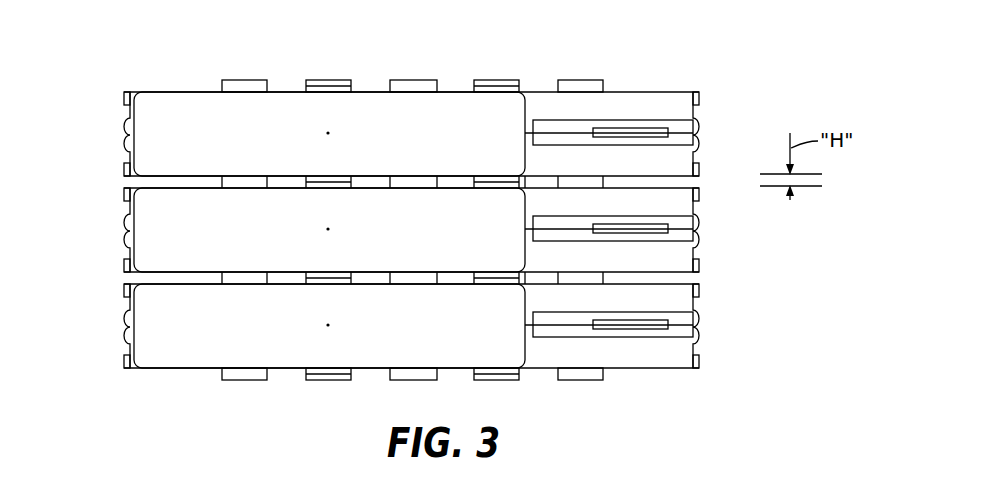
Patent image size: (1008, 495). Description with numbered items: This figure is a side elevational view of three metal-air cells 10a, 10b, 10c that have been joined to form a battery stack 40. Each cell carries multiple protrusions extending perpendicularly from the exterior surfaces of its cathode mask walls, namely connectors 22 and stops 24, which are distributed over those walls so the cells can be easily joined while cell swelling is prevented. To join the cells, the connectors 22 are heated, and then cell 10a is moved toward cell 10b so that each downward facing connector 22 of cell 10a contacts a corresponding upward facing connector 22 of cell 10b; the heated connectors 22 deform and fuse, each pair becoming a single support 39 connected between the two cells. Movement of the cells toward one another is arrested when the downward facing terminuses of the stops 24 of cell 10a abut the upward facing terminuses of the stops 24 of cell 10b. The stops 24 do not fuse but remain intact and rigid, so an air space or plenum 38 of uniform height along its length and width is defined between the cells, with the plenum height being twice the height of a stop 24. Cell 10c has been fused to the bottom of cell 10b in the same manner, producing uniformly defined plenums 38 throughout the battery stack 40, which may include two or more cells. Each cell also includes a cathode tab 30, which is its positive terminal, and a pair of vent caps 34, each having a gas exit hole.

The metal-air cell 10a is at (110, 121).
The metal-air cell 10b is at (110, 250).
The metal-air cell 10c is at (110, 348).
The connector 22 is at (245, 80).
The stop 24 is at (349, 80).
The cathode tab 30 is at (661, 137).
The vent cap 34 is at (448, 146).
The plenum 38 is at (118, 183).
The support 39 is at (222, 188).
The battery stack 40 is at (722, 67).